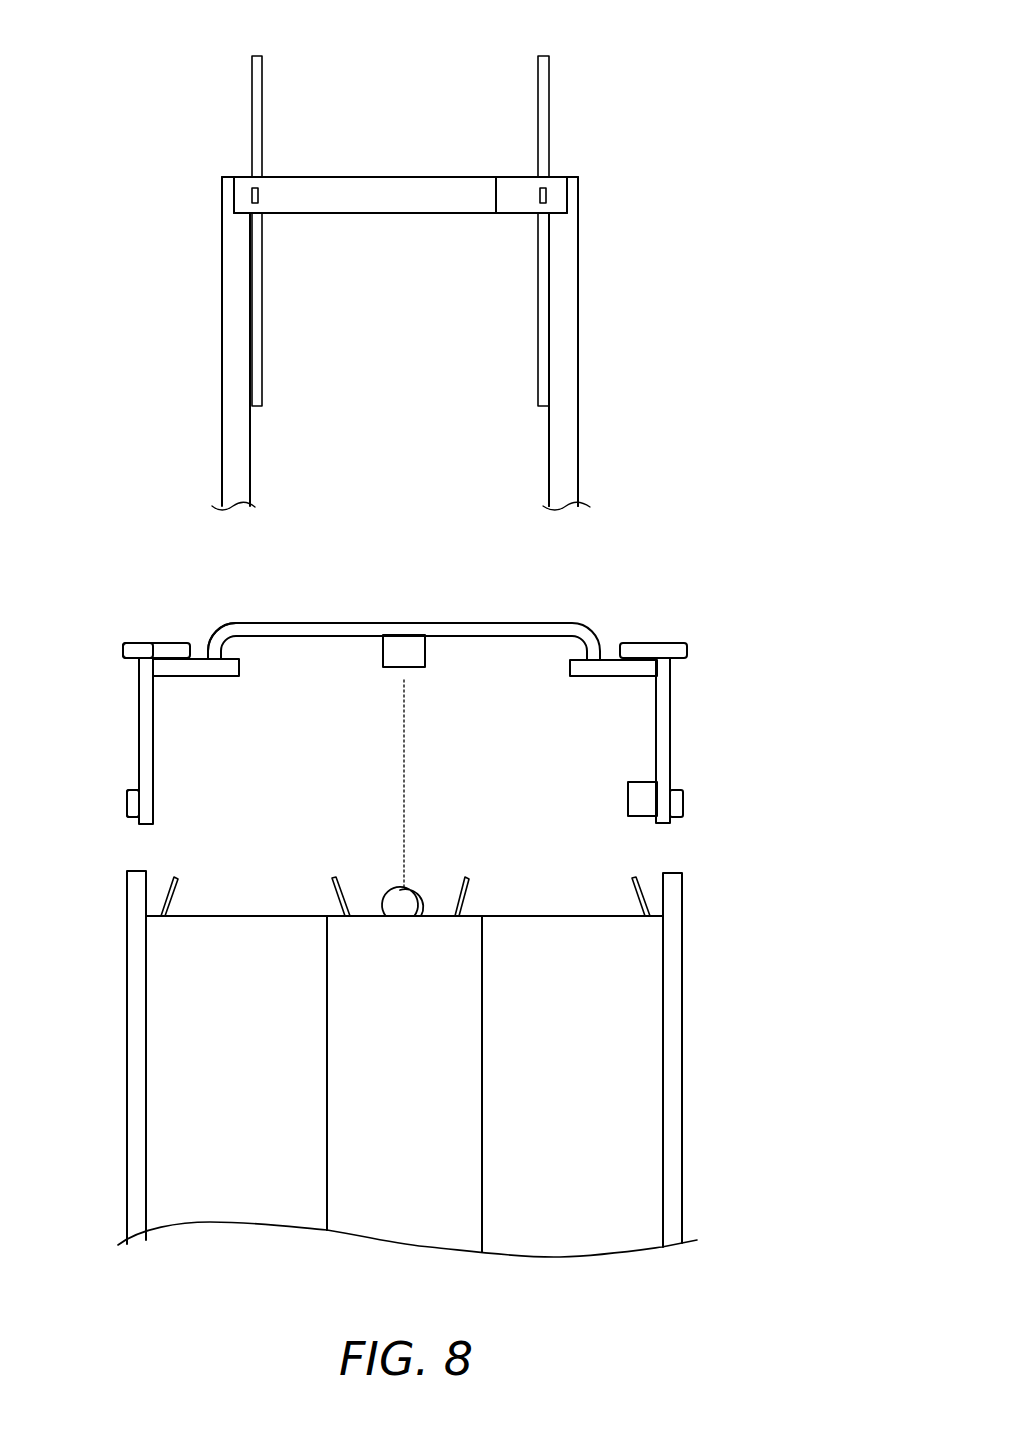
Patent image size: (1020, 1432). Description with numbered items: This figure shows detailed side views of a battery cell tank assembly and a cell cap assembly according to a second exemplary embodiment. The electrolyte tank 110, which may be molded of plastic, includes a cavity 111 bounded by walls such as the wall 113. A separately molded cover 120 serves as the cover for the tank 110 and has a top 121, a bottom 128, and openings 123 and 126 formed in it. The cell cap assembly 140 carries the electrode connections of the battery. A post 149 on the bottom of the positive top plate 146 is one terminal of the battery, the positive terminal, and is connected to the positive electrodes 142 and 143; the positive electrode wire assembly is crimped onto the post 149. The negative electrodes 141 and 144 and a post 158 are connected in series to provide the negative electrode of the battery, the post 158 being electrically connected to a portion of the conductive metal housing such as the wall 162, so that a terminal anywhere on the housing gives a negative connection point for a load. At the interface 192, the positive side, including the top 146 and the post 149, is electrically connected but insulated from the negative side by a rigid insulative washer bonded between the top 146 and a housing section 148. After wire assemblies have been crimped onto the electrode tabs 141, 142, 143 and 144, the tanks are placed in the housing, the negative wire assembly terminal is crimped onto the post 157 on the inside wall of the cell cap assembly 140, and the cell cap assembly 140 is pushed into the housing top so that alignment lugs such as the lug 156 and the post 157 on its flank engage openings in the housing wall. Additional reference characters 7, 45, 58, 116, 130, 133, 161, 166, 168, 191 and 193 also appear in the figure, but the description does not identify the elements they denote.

The conduit 7 is at (400, 907).
The support 45 is at (378, 1192).
The pivot 58 is at (413, 890).
The tank 110 is at (183, 1133).
The cavity 111 is at (292, 370).
The wall 113 is at (228, 328).
The side wall 116 is at (580, 345).
The cover 120 is at (442, 198).
The top 121 is at (335, 177).
The opening 123 is at (252, 195).
The opening 126 is at (546, 195).
The bottom 128 is at (388, 213).
The frame assembly 130 is at (653, 422).
The leg 133 is at (562, 455).
The cell cap assembly 140 is at (733, 1032).
The negative electrode 141 is at (538, 115).
The positive electrode 142 is at (333, 895).
The positive electrode 143 is at (468, 880).
The negative electrode 144 is at (637, 903).
The top 146 is at (358, 628).
The housing section 148 is at (162, 653).
The post 149 is at (412, 652).
The alignment lug 156 is at (128, 803).
The post 157 is at (685, 797).
The post 158 is at (640, 817).
The cap 161 is at (650, 650).
The wall 162 is at (146, 730).
The tab 166 is at (137, 792).
The post 168 is at (127, 947).
The ledge 191 is at (617, 677).
The interface 192 is at (210, 655).
The cap end 193 is at (123, 652).